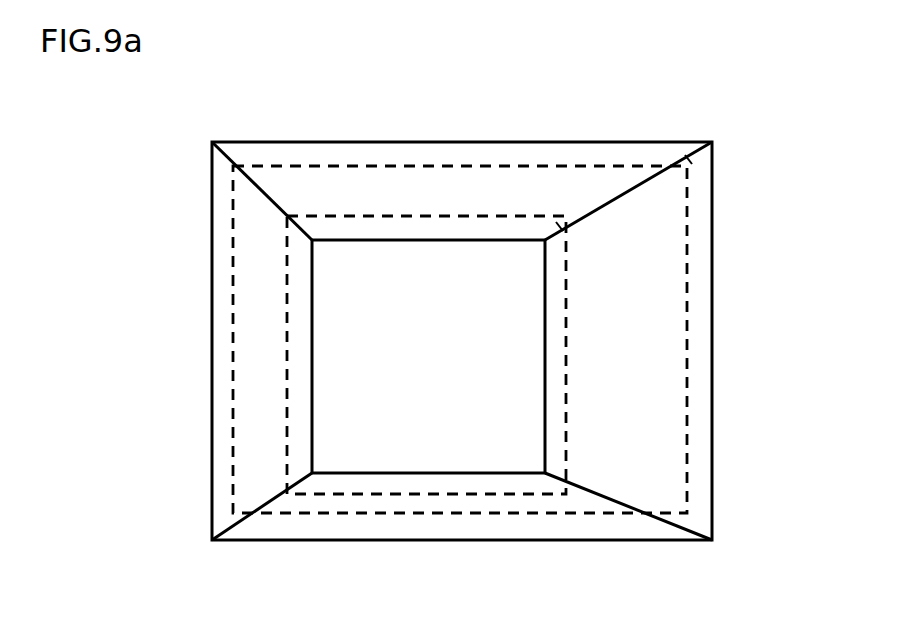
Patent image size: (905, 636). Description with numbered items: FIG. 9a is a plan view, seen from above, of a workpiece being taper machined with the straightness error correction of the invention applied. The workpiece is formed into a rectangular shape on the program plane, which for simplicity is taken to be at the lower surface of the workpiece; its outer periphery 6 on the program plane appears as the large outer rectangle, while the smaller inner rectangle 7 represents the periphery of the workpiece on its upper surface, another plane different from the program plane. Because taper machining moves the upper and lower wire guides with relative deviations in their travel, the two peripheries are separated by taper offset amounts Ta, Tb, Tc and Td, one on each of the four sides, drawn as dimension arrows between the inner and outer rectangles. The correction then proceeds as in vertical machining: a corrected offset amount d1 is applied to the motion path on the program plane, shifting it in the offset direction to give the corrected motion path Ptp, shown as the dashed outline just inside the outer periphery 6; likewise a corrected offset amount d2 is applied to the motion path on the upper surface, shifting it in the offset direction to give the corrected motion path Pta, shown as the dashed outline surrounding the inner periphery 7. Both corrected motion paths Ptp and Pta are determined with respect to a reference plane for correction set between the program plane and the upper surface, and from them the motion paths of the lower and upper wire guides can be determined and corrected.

The substrate / chip outer edge 6 is at (520, 341).
The window opening inner edge 7 is at (326, 341).
The motion path on the program plane (corrected) Ptp is at (649, 164).
The motion path on the upper surface of the workpiece (corrected) Pta is at (674, 486).
The corrected offset amount on the program plane d1 is at (455, 341).
The corrected offset amount on the upper surface of the workpiece d2 is at (535, 381).
The taper offset amount Ta is at (712, 342).
The taper offset amount Tb is at (447, 142).
The taper offset amount Tc is at (297, 341).
The taper offset amount Td is at (447, 489).